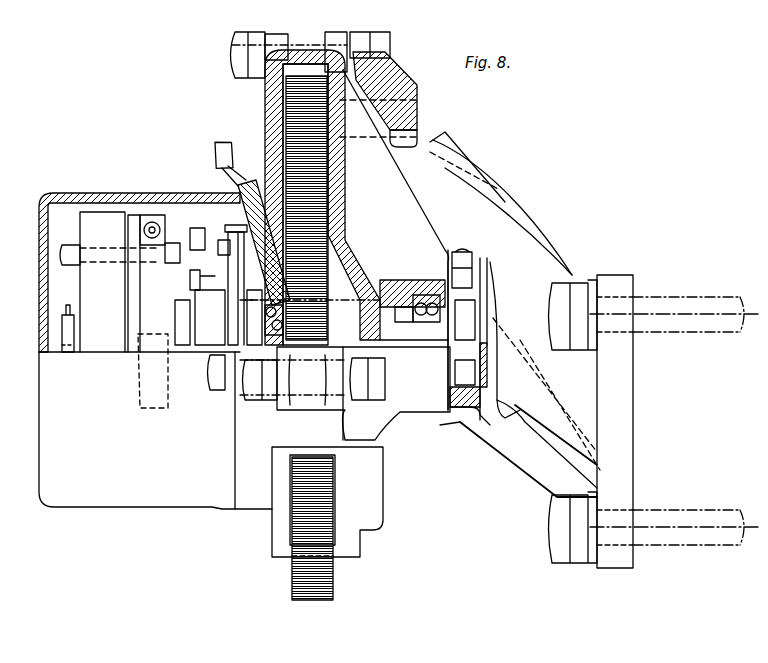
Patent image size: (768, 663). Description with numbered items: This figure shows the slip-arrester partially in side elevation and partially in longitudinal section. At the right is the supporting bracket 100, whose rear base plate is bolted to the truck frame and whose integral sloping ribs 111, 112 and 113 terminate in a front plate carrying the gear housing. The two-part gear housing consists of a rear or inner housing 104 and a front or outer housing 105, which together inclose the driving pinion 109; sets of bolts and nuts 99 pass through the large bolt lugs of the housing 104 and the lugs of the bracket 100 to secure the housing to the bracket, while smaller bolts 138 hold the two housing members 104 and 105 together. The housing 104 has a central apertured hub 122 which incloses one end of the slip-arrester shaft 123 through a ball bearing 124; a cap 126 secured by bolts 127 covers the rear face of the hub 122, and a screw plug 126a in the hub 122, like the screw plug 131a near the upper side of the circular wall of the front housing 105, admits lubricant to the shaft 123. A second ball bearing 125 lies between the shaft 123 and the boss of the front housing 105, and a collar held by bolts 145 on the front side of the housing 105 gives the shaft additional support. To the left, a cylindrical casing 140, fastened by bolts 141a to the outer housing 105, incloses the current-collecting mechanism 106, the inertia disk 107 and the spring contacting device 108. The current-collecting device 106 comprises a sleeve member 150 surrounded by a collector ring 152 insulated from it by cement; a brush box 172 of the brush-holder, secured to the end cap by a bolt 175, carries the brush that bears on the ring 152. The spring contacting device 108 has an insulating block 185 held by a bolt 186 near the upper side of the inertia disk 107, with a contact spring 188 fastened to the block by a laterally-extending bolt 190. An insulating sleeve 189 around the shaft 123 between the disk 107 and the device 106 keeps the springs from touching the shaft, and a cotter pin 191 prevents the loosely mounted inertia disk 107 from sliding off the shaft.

The bolts and nuts 99 is at (275, 95).
The supporting bracket 100 is at (633, 405).
The rear or inner housing 104 is at (336, 168).
The front or outer housing 105 is at (268, 112).
The current-collecting mechanism 106 is at (208, 236).
The inertia disk 107 is at (80, 230).
The spring contacting device 108 is at (190, 278).
The driving pinion 109 is at (333, 596).
The sloping web or rib 111 is at (540, 478).
The sloping web or rib 112 is at (542, 236).
The sloping web or rib 113 is at (458, 168).
The hub 122 is at (412, 278).
The slip-arrester shaft 123 is at (430, 346).
The ball bearing 124 is at (430, 294).
The ball bearing 125 is at (300, 304).
The cap or end covering 126 is at (465, 424).
The screw plug 126a is at (470, 254).
The bolts 127 is at (548, 404).
The screw plug 131a is at (238, 166).
The bolts 138 is at (246, 34).
The cylindrical shell or casing 140 is at (128, 497).
The bolts 141a is at (212, 384).
The bolts 145 is at (230, 232).
The sleeve member 150 is at (243, 322).
The collector ring 152 is at (200, 317).
The brush box or frame 172 is at (185, 290).
The bolt 175 is at (218, 248).
The insulating block 185 is at (138, 203).
The bolt 186 is at (181, 244).
The contact spring 188 is at (140, 392).
The insulating sleeve 189 is at (135, 344).
The laterally-extending bolt 190 is at (158, 224).
The cotter pin 191 is at (66, 315).